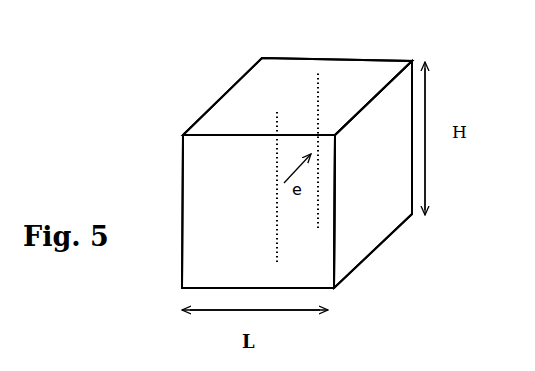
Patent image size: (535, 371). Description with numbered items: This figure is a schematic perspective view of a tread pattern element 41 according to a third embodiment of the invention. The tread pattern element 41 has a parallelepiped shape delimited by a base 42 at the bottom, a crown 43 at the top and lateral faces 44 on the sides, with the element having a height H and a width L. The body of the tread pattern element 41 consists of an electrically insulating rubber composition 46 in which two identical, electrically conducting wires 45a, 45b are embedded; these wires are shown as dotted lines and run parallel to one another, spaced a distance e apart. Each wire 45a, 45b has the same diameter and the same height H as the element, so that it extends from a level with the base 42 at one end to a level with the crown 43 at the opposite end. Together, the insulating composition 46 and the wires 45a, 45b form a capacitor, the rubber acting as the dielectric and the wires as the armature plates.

The tread pattern element 41 is at (217, 58).
The base 42 is at (188, 291).
The crown 43 is at (368, 56).
The lateral faces 44 is at (385, 182).
The wire 45a is at (276, 148).
The wire 45b is at (320, 92).
The electrically insulating rubber composition 46 is at (228, 240).